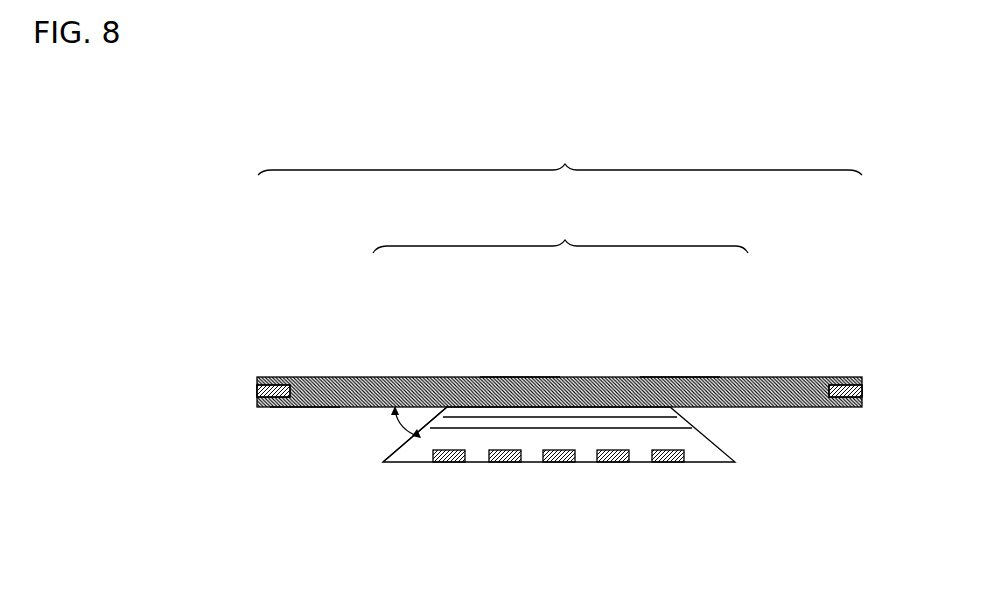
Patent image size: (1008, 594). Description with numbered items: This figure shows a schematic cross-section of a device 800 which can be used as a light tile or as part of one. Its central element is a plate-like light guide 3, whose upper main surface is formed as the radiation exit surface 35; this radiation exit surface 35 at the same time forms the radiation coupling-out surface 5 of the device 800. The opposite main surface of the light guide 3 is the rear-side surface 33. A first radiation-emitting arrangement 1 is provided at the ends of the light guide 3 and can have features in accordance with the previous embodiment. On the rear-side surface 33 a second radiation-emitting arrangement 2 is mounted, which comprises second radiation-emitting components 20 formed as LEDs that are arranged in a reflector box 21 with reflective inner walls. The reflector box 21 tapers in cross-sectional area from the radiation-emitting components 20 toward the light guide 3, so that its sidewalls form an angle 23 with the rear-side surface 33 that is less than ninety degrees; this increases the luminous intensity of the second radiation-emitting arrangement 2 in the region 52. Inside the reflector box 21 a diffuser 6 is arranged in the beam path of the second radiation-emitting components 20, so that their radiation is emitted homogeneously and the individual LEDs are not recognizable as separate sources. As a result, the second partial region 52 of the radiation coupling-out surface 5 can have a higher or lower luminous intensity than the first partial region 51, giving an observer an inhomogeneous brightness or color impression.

The device 800 is at (390, 80).
The first partial region 51 is at (565, 163).
The second partial region 52 is at (565, 239).
The light guide 3 is at (325, 388).
The radiation exit surface 35 is at (518, 376).
The radiation coupling-out surface 5 is at (676, 376).
The first radiation-emitting arrangement 1 is at (280, 392).
The rear-side surface 33 is at (303, 408).
The angle 23 is at (401, 427).
The second radiation-emitting arrangement 2 is at (527, 437).
The reflector box 21 is at (390, 462).
The diffuser 6 is at (688, 425).
The second radiation-emitting components 20 is at (622, 462).